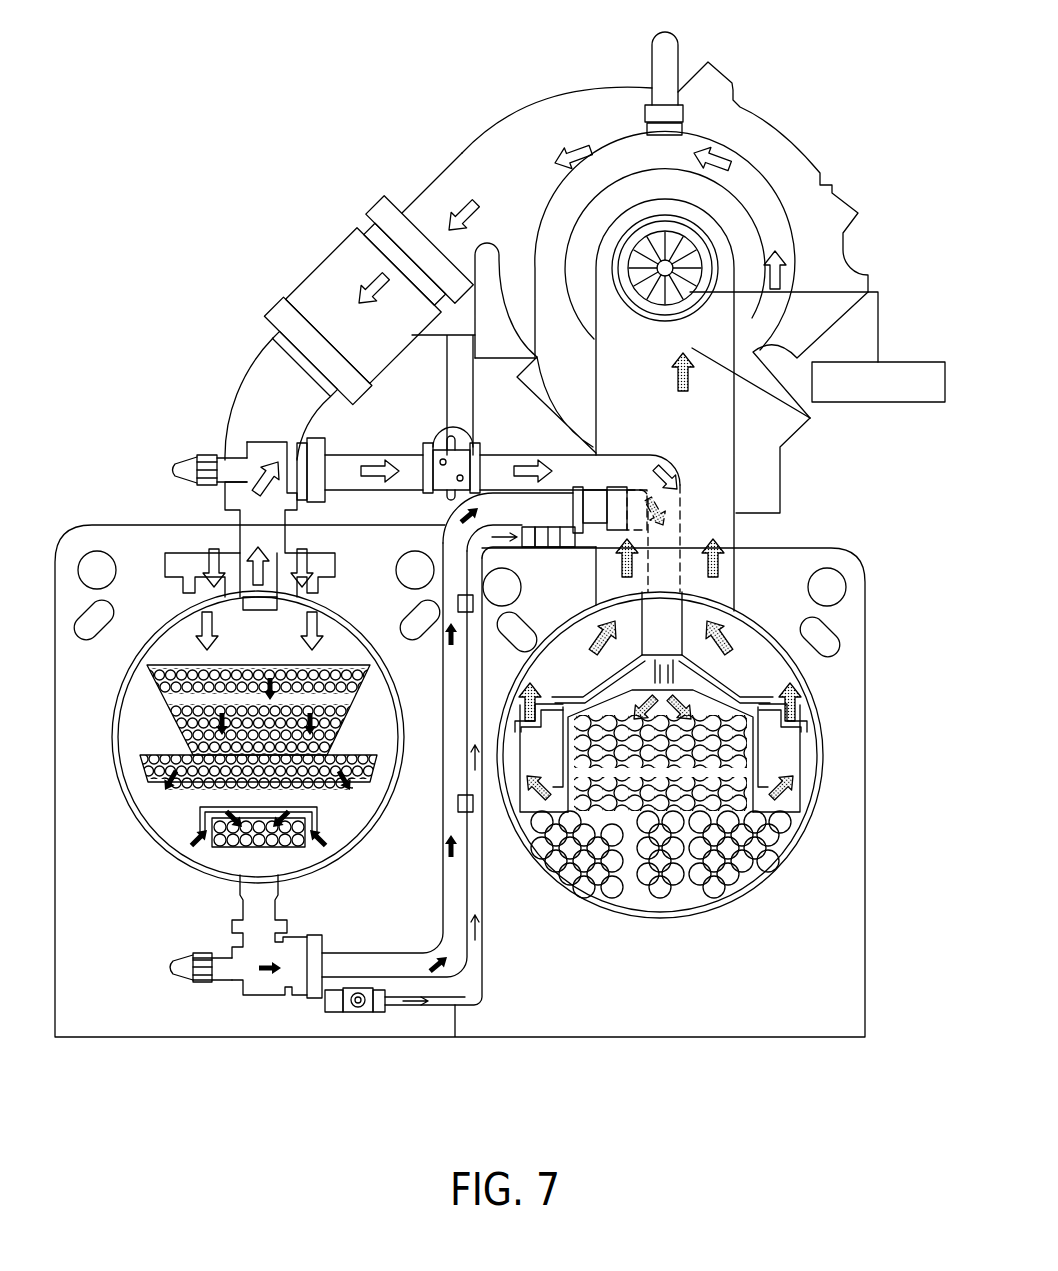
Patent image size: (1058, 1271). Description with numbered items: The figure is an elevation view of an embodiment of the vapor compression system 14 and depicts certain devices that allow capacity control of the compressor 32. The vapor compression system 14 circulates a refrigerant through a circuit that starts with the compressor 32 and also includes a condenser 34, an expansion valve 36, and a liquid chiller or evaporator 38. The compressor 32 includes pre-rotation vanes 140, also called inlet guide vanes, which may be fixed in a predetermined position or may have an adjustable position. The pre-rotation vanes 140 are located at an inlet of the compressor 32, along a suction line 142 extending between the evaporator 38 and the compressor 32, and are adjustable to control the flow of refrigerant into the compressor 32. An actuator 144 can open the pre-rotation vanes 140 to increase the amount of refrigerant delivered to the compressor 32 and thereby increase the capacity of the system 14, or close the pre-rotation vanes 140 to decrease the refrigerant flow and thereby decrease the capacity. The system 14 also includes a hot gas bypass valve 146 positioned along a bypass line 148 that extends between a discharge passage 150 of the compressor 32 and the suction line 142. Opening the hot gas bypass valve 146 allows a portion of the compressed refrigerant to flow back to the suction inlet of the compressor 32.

The vapor compression system 14 is at (222, 222).
The compressor 32 is at (520, 131).
The condenser 34 is at (123, 677).
The expansion valve 36 is at (618, 485).
The evaporator 38 is at (778, 633).
The pre-rotation vanes 140 is at (700, 270).
The suction line 142 is at (810, 423).
The actuator 144 is at (905, 362).
The hot gas bypass valve 146 is at (442, 472).
The bypass line 148 is at (330, 457).
The discharge passage 150 is at (257, 388).